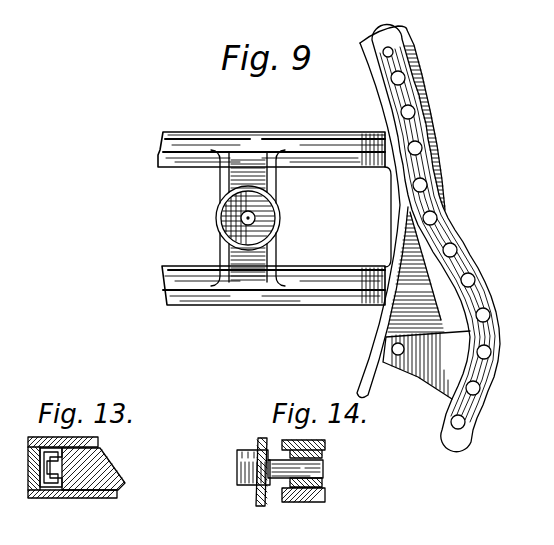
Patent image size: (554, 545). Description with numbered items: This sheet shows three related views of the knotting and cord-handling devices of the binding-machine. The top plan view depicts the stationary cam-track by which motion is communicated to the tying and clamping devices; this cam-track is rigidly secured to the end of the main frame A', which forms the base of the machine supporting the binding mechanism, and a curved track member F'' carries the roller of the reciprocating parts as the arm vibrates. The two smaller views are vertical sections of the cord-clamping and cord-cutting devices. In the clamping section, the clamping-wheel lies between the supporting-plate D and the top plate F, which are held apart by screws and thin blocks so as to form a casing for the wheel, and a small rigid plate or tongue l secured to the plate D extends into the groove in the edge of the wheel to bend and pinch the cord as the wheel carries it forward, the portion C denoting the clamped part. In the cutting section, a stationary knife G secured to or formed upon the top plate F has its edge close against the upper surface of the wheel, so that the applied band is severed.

In FIG. 9, the main frame A' is at (274, 232).
In FIG. 9, the curved spring bar F'' is at (443, 237).
In FIG. 13, the plate or tongue l is at (40, 463).
In FIG. 13, the block C is at (100, 465).
In FIG. 14, the block C is at (306, 467).
In FIG. 14, the stationary knife G is at (258, 434).
In FIG. 14, the top plate F is at (314, 444).
In FIG. 14, the supporting-plate D is at (304, 503).